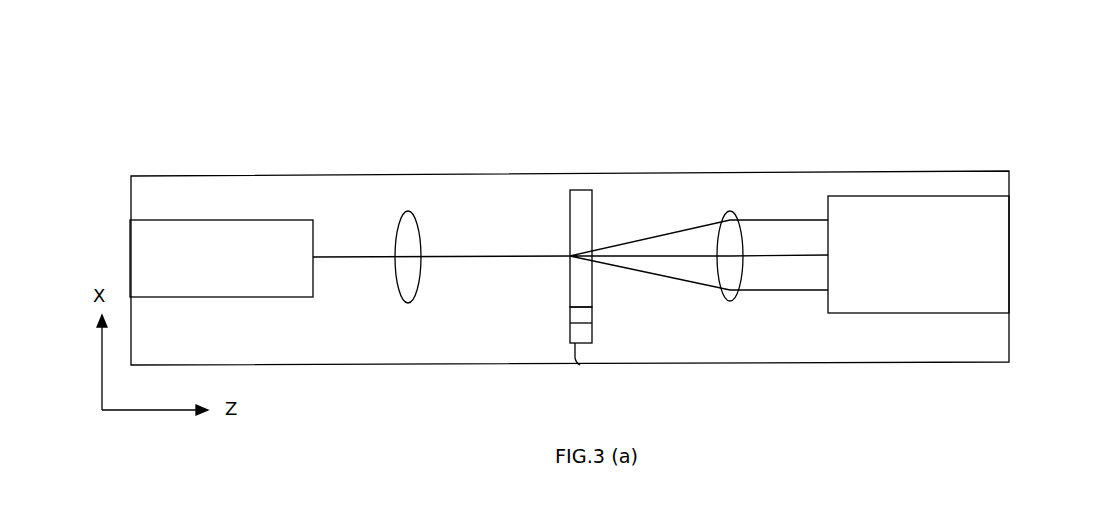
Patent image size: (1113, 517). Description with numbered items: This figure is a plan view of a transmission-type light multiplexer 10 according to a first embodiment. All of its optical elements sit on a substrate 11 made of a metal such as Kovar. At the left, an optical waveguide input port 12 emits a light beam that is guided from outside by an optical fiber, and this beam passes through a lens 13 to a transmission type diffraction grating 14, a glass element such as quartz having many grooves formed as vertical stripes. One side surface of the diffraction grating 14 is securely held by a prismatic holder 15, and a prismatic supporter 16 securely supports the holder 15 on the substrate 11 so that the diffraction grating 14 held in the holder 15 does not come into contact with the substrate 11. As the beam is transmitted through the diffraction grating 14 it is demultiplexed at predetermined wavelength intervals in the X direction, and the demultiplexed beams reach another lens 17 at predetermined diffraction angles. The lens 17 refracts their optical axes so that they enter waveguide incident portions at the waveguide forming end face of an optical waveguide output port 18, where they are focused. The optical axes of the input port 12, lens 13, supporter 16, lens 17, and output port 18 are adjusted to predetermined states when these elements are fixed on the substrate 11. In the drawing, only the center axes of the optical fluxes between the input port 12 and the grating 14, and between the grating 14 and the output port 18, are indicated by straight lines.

The light multiplexer 10 is at (655, 73).
The substrate 11 is at (907, 362).
The optical waveguide input port 12 is at (203, 219).
The lens 13 is at (407, 210).
The transmission type diffraction grating 14 is at (568, 207).
The holder 15 is at (592, 313).
The supporter 16 is at (580, 365).
The lens 17 is at (730, 211).
The optical waveguide output port 18 is at (928, 197).